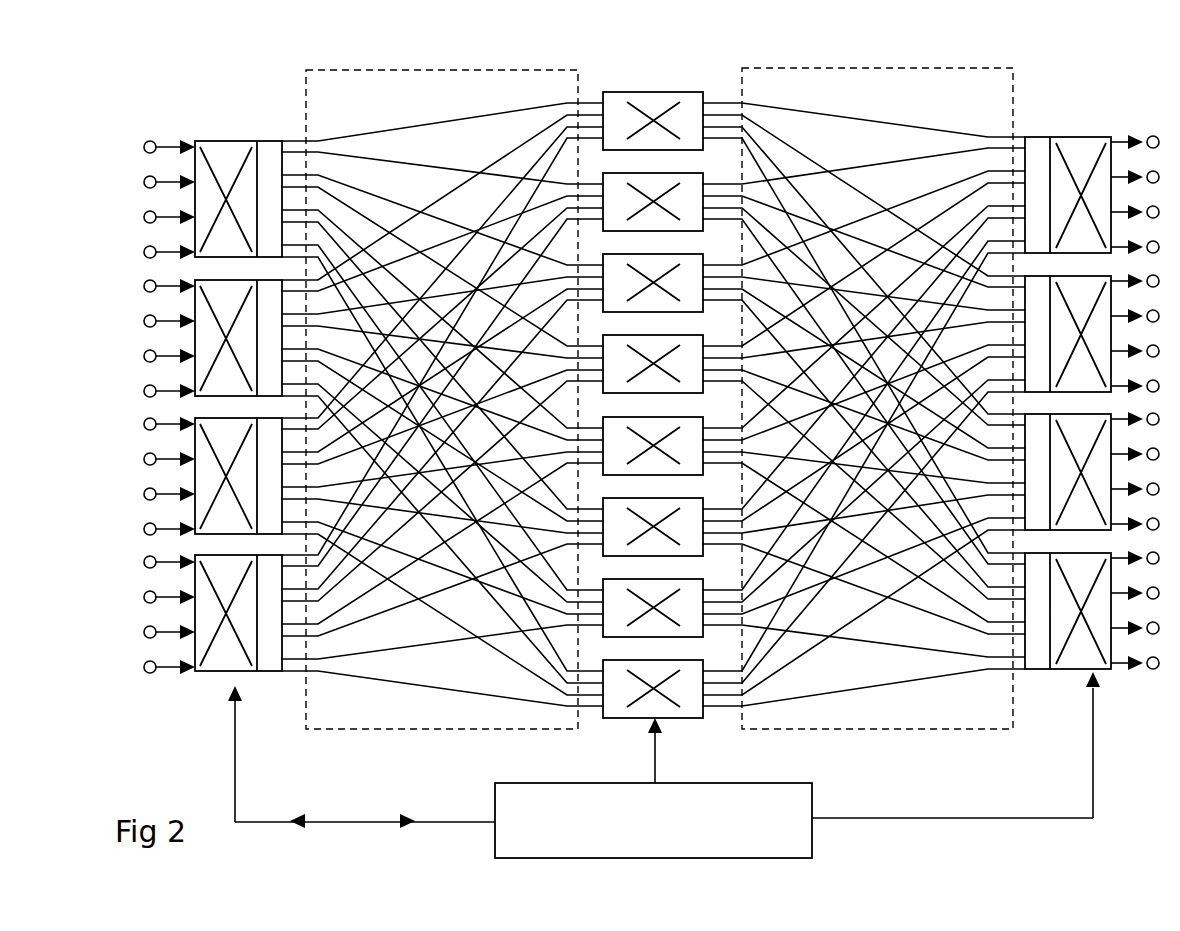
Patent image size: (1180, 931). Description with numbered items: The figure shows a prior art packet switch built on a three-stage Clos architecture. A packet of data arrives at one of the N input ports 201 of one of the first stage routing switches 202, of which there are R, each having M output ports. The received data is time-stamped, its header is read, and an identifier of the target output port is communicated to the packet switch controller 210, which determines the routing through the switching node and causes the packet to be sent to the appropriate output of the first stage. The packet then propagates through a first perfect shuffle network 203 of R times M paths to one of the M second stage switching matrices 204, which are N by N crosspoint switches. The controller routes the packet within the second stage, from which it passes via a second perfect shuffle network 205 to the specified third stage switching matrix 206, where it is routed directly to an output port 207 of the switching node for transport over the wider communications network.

The input ports 201 is at (149, 136).
The first stage routing switches 202 is at (243, 137).
The first perfect shuffle network 203 is at (415, 72).
The second stage switching matrices 204 is at (643, 85).
The second perfect shuffle network 205 is at (845, 68).
The third stage switching matrix 206 is at (1063, 135).
The output port 207 is at (1153, 672).
The packet switch controller 210 is at (664, 788).